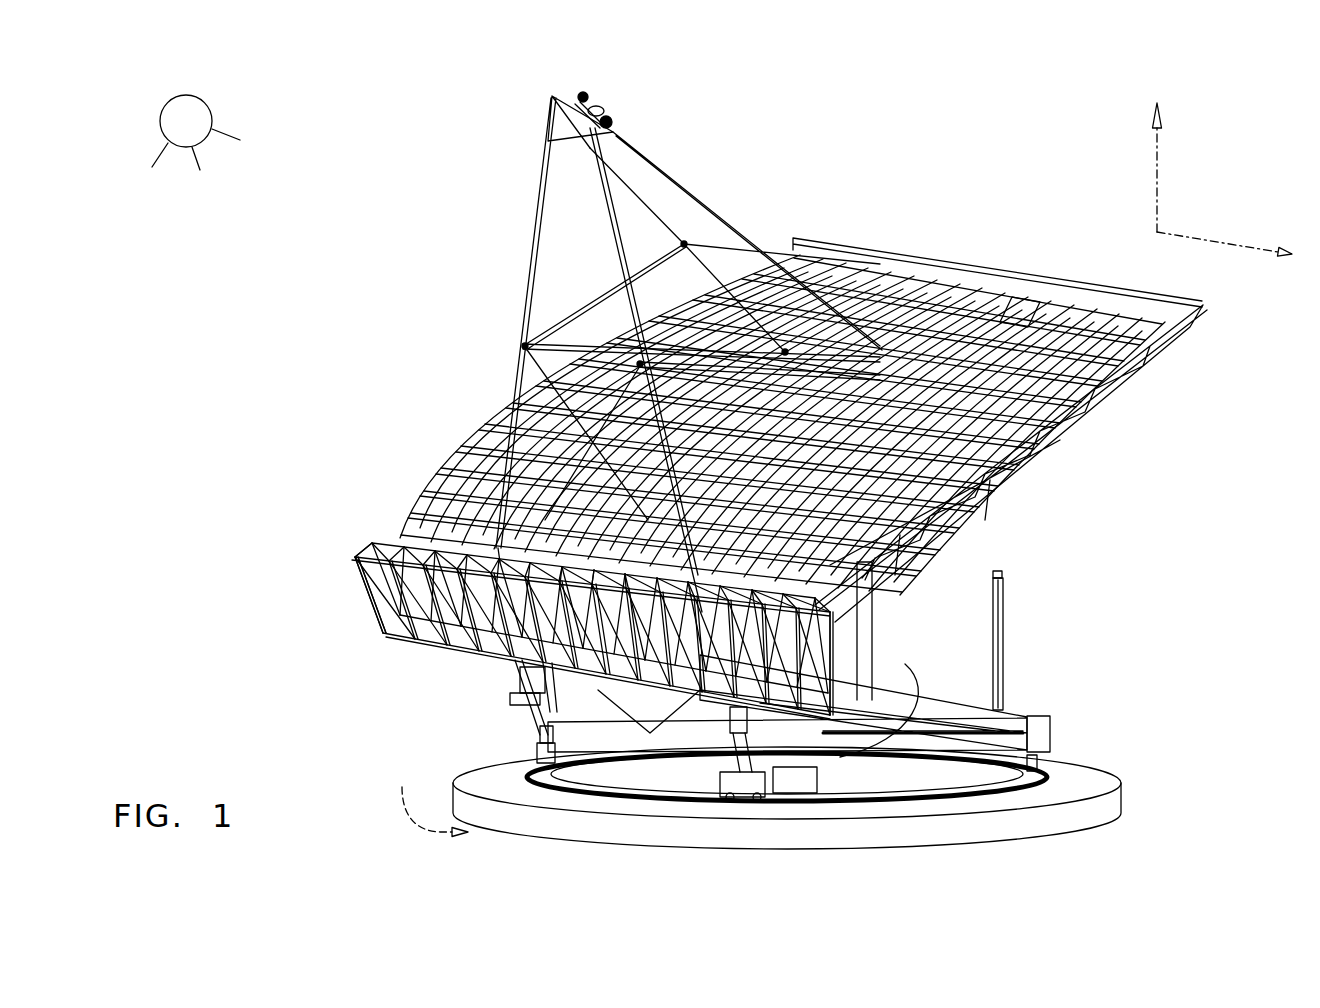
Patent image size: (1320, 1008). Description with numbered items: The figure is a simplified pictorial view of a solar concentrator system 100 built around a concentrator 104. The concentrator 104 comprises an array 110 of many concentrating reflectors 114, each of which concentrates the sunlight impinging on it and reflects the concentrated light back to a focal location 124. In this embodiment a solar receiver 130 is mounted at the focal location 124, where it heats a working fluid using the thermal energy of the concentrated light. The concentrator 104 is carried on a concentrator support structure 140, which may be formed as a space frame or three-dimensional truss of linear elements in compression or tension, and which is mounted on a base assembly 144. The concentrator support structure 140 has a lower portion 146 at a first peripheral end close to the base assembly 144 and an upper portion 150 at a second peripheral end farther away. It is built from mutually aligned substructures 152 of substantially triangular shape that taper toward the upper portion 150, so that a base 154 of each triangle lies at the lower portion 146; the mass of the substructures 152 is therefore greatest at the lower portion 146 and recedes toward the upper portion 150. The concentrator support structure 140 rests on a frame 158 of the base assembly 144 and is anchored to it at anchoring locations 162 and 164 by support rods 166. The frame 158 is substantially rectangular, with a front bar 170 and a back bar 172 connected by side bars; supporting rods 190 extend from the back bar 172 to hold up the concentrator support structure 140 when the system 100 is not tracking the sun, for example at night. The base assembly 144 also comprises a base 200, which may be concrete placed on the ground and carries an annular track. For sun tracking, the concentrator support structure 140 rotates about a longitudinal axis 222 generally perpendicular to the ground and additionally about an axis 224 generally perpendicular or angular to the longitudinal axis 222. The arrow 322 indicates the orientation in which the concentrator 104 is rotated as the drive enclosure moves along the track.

The solar concentrator system 100 is at (365, 171).
The concentrator 104 is at (432, 433).
The array 110 is at (378, 518).
The concentrating reflectors 114 is at (1012, 268).
The focal location 124 is at (612, 120).
The solar receiver 130 is at (598, 96).
The concentrator support structure 140 is at (1058, 470).
The base assembly 144 is at (398, 740).
The lower portion 146 is at (352, 560).
The upper portion 150 is at (886, 253).
The substructures 152 is at (1097, 405).
The base of the triangle 154 is at (383, 630).
The frame 158 is at (1043, 728).
The anchoring location 162 is at (500, 705).
The anchoring location 164 is at (885, 693).
The support rods 166 is at (500, 688).
The front bar 170 is at (537, 753).
The back bar 172 is at (958, 700).
The supporting rods 190 is at (1002, 620).
The base 200 is at (1090, 810).
The longitudinal axis 222 is at (1160, 180).
The axis 224 is at (1222, 245).
The arrow 322 is at (402, 815).